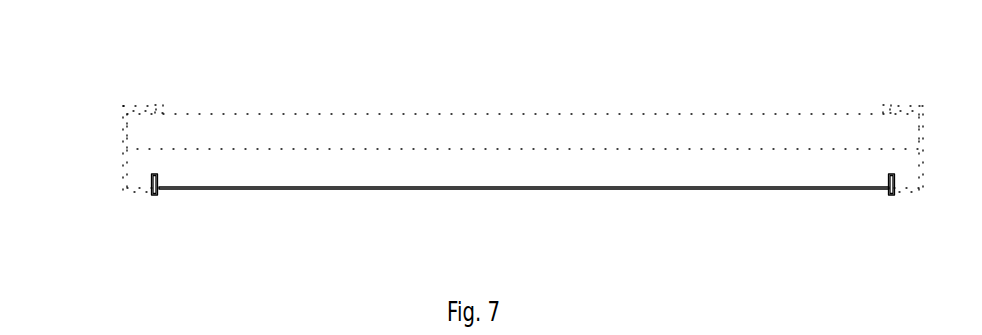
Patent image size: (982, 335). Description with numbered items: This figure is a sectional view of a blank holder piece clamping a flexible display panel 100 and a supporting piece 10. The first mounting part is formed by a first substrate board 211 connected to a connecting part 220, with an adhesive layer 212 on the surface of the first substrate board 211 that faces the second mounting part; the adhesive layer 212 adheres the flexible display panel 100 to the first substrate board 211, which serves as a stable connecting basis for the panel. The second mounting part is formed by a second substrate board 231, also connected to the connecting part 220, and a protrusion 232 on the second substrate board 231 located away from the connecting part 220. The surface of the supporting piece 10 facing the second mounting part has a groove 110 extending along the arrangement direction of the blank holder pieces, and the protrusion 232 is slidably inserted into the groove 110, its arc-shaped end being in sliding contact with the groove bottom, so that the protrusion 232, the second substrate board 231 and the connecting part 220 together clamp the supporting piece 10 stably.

The supporting piece 10 is at (362, 173).
The flexible display panel 100 is at (275, 125).
The groove 110 is at (150, 179).
The first substrate board 211 is at (132, 105).
The adhesive layer 212 is at (156, 104).
The connecting part 220 is at (122, 140).
The second substrate board 231 is at (137, 193).
The protrusion 232 is at (155, 196).